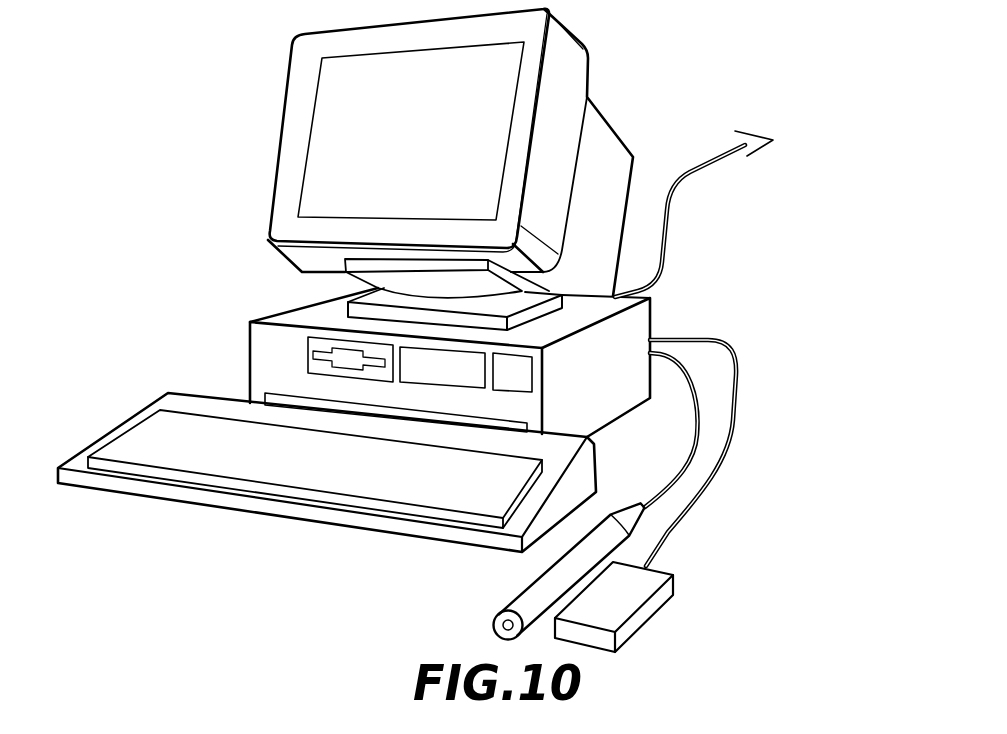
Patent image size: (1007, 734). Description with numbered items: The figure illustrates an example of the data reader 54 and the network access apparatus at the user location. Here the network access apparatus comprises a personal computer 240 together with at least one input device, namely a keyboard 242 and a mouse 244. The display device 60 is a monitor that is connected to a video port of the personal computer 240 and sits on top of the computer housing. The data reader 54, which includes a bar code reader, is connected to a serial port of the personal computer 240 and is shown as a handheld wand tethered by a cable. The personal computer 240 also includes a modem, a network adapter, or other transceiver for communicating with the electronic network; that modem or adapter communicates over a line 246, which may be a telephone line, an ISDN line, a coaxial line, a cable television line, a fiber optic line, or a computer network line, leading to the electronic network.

The display device 60 is at (293, 73).
The personal computer 240 is at (272, 312).
The keyboard 242 is at (140, 413).
The data reader 54 is at (530, 585).
The mouse 244 is at (637, 635).
The line 246 is at (675, 197).